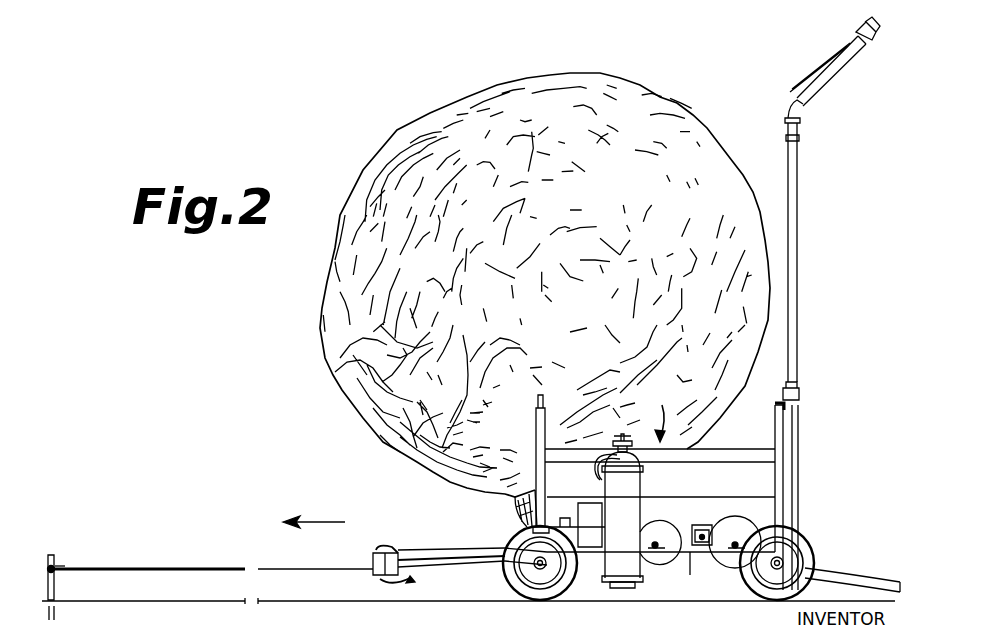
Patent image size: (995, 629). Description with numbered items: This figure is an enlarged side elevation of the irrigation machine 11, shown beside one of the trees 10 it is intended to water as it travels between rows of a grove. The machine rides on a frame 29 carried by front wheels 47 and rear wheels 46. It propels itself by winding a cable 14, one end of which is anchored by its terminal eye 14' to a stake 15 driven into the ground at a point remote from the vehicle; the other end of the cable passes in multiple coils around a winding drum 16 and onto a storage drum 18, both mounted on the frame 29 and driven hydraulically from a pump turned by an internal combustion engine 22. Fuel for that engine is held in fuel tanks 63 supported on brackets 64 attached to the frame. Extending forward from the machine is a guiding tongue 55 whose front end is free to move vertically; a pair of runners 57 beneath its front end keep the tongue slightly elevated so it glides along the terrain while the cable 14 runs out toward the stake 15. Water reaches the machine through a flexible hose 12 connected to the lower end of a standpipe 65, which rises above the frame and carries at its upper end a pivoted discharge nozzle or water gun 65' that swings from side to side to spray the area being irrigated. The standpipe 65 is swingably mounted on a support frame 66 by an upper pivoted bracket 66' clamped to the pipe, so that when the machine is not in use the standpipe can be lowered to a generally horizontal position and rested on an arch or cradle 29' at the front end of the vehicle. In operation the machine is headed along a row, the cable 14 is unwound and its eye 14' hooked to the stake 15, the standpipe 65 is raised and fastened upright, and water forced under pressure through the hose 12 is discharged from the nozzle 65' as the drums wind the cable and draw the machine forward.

The trees 10 is at (328, 326).
The irrigation machine 11 is at (654, 418).
The flexible hose 12 is at (874, 556).
The cable 14 is at (211, 553).
The terminal eye 14' is at (83, 552).
The stake 15 is at (55, 558).
The winding drum 16 is at (648, 526).
The storage drum 18 is at (736, 520).
The internal combustion engine 22 is at (580, 505).
The frame 29 is at (679, 572).
The arch or cradle 29' is at (520, 464).
The rear wheels 46 is at (802, 540).
The front wheels 47 is at (532, 598).
The guiding tongue 55 is at (440, 552).
The runners 57 is at (390, 579).
The fuel tanks 63 is at (640, 488).
The brackets 64 is at (614, 585).
The standpipe 65 is at (813, 356).
The discharge nozzle or water gun 65' is at (832, 70).
The support frame 66 is at (762, 496).
The upper pivoted bracket 66' is at (817, 394).